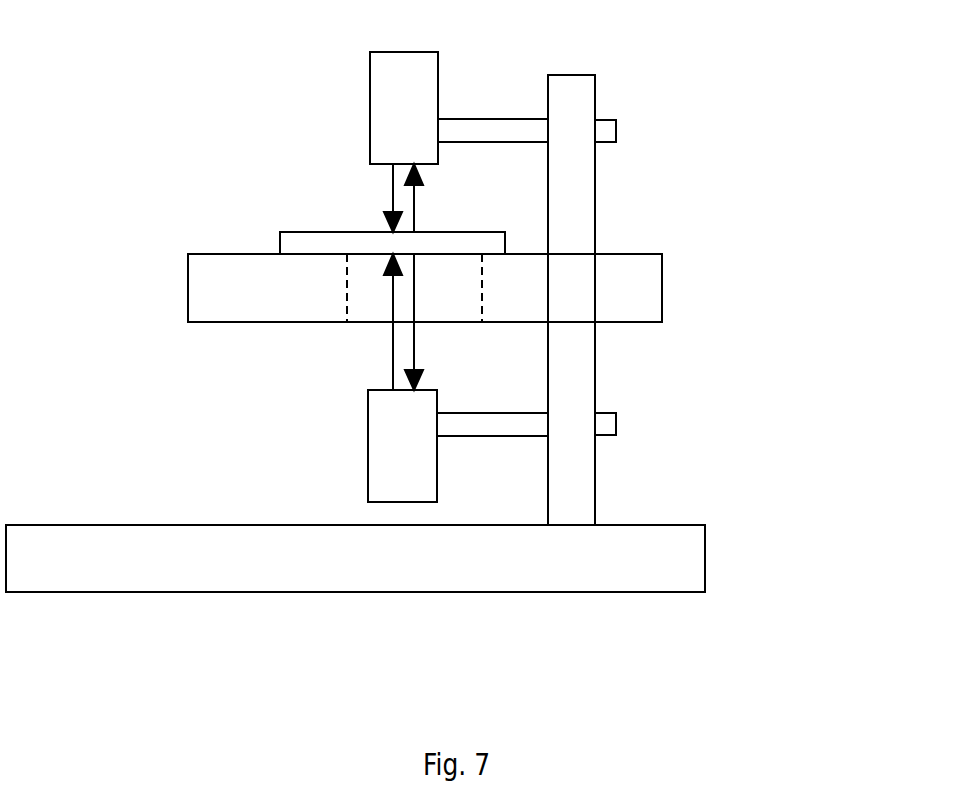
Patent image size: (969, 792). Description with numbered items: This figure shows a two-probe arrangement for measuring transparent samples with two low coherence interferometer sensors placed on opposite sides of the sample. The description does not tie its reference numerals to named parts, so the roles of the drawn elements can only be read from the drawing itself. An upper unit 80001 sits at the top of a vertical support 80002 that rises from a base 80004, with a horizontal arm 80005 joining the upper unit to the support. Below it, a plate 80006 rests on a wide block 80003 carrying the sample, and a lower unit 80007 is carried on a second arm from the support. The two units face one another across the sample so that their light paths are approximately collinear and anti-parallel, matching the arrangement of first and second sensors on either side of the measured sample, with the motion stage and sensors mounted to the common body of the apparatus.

The drive unit 80001 is at (438, 73).
The support column 80002 is at (595, 165).
The workpiece carrier 80003 is at (662, 322).
The base 80004 is at (638, 523).
The upper pressing head 80005 is at (370, 118).
The pressing plate 80006 is at (298, 231).
The lower pressing head 80007 is at (368, 433).